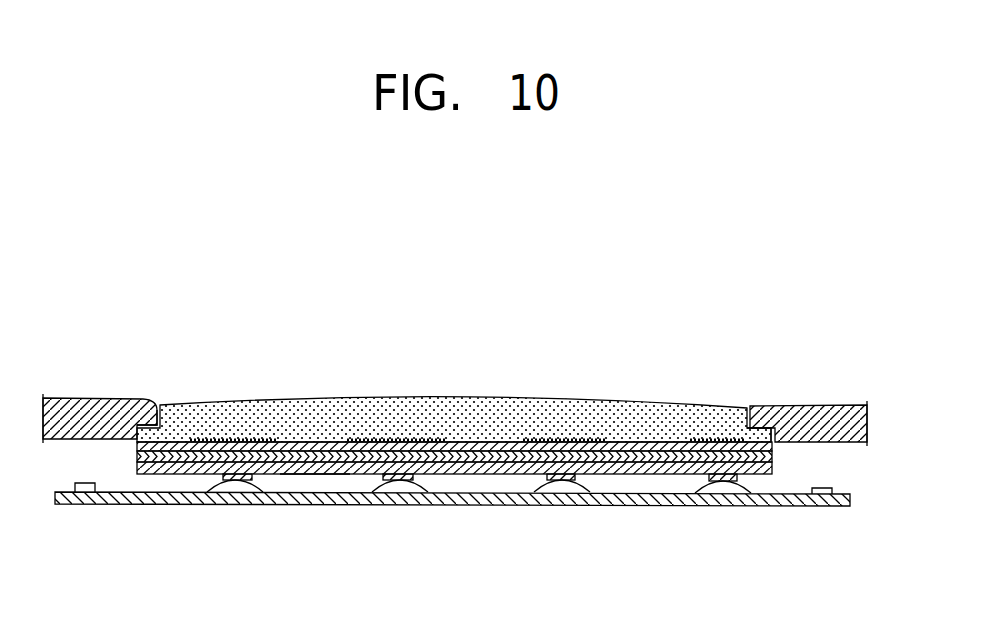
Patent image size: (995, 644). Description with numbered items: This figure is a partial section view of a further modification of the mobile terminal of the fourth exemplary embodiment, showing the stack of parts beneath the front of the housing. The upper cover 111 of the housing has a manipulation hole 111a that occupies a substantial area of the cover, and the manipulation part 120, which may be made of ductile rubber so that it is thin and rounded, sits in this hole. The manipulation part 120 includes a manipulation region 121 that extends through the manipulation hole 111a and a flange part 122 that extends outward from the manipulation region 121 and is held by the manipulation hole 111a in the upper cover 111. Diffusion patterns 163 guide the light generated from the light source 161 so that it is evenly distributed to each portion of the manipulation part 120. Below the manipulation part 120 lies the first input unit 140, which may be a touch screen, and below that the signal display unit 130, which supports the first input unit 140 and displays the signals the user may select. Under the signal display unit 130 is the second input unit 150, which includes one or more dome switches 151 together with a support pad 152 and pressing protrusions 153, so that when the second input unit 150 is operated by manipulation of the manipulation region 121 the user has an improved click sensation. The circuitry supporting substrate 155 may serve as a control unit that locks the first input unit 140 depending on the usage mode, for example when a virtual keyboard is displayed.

The upper cover 111 is at (803, 406).
The manipulation hole 111a is at (163, 410).
The manipulation part 120 is at (456, 373).
The manipulation region 121 is at (695, 407).
The flange part 122 is at (760, 392).
The signal display unit 130 is at (648, 466).
The first input unit 140 is at (596, 449).
The second input unit 150 is at (479, 534).
The dome switch 151 is at (238, 488).
The support pad 152 is at (315, 515).
The pressing protrusion 153 is at (395, 480).
The circuitry supporting substrate 155 is at (738, 502).
The light source 161 is at (83, 505).
The diffusion patterns 163 is at (197, 441).